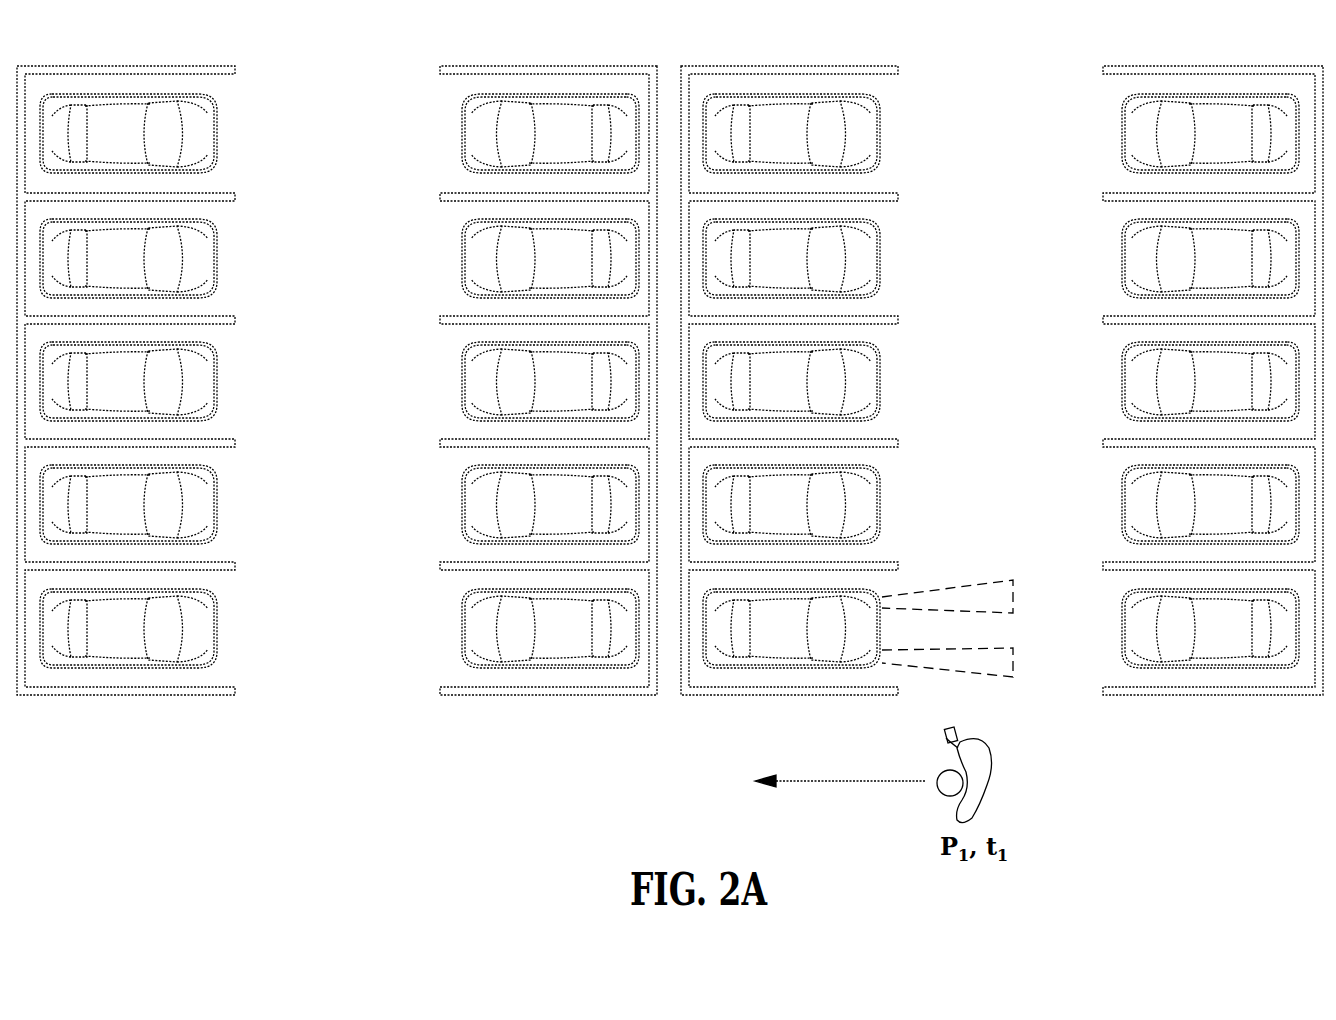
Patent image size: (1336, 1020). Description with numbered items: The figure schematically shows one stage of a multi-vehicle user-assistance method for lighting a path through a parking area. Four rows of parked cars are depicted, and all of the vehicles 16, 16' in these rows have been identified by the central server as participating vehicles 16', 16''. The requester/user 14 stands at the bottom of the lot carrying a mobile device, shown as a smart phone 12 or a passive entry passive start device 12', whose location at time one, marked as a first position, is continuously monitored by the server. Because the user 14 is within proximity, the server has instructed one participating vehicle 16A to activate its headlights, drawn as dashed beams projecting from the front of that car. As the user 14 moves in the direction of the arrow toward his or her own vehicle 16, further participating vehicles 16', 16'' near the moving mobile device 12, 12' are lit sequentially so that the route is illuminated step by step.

The user's vehicle 16 is at (512, 133).
The participating vehicle 16' is at (669, 381).
The participating vehicle 16'' is at (669, 381).
The participating vehicle 16A is at (801, 643).
The smart phone 12 is at (874, 741).
The passive entry passive start device 12' is at (874, 741).
The requester/user 14 is at (990, 782).